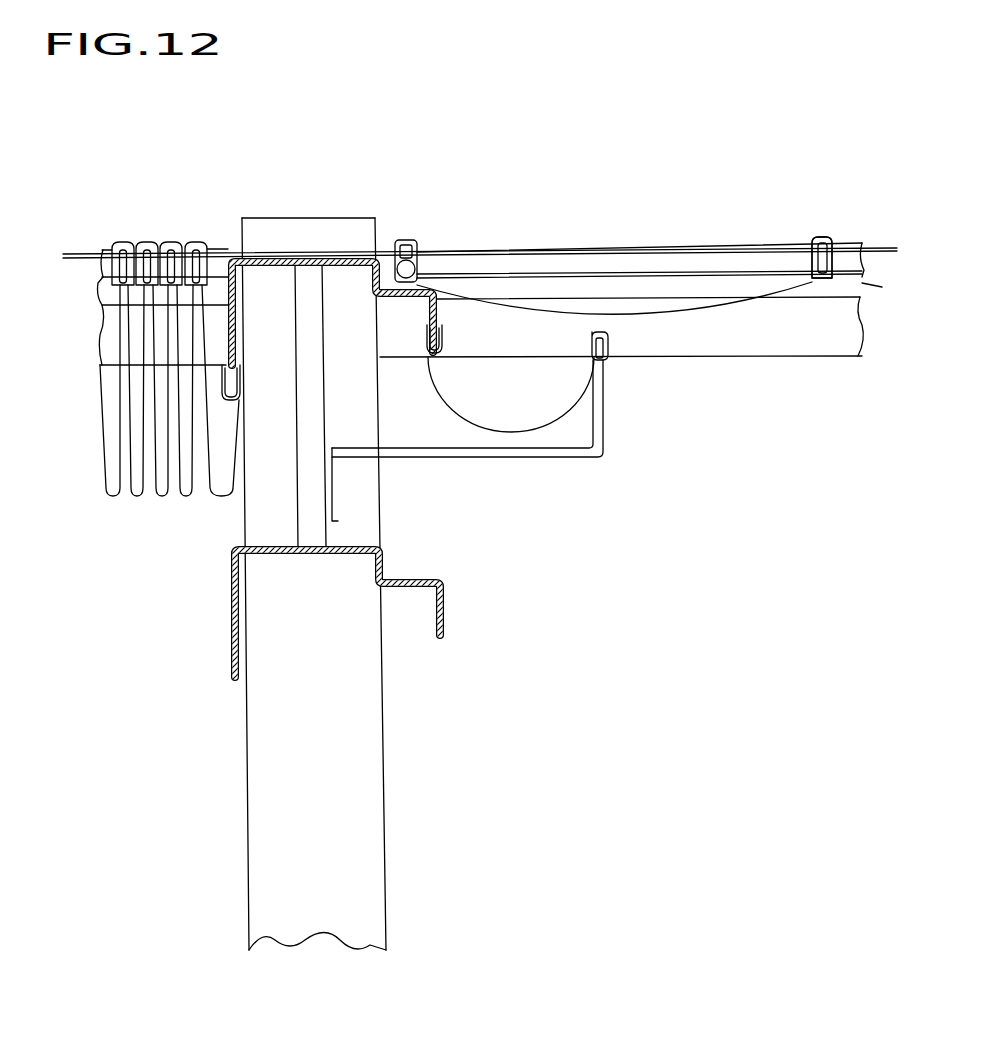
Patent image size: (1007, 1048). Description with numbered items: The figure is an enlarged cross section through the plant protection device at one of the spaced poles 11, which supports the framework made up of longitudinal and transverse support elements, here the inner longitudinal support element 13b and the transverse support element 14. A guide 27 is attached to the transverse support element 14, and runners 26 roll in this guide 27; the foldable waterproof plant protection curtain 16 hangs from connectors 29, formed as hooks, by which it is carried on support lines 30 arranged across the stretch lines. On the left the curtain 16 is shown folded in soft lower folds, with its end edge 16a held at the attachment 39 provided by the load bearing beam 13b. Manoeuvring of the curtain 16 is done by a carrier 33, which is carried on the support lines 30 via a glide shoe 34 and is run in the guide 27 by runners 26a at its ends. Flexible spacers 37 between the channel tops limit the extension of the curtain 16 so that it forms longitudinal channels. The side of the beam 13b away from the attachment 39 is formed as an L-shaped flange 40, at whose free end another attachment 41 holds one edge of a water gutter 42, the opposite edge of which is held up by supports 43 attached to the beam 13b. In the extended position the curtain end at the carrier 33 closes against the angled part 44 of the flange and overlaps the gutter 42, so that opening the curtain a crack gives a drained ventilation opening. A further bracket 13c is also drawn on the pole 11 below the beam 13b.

The pole 11 is at (268, 793).
The inner longitudinal support element 13b is at (305, 248).
The lower bracket 13c is at (443, 606).
The transverse support element 14 is at (112, 332).
The plant protection curtain 16 is at (720, 315).
The end edge 16a is at (222, 380).
The runner 26 is at (143, 240).
The runner 26a is at (399, 240).
The guide 27 is at (102, 268).
The connector 29 is at (193, 240).
The support line 30 is at (863, 244).
The carrier 33 is at (416, 263).
The glide shoe 34 is at (411, 244).
The flexible spacer 37 is at (680, 272).
The attachment 39 is at (234, 390).
The L-shaped flange 40 is at (440, 318).
The attachment 41 is at (430, 350).
The water gutter 42 is at (562, 422).
The support 43 is at (470, 455).
The angled part 44 is at (428, 300).